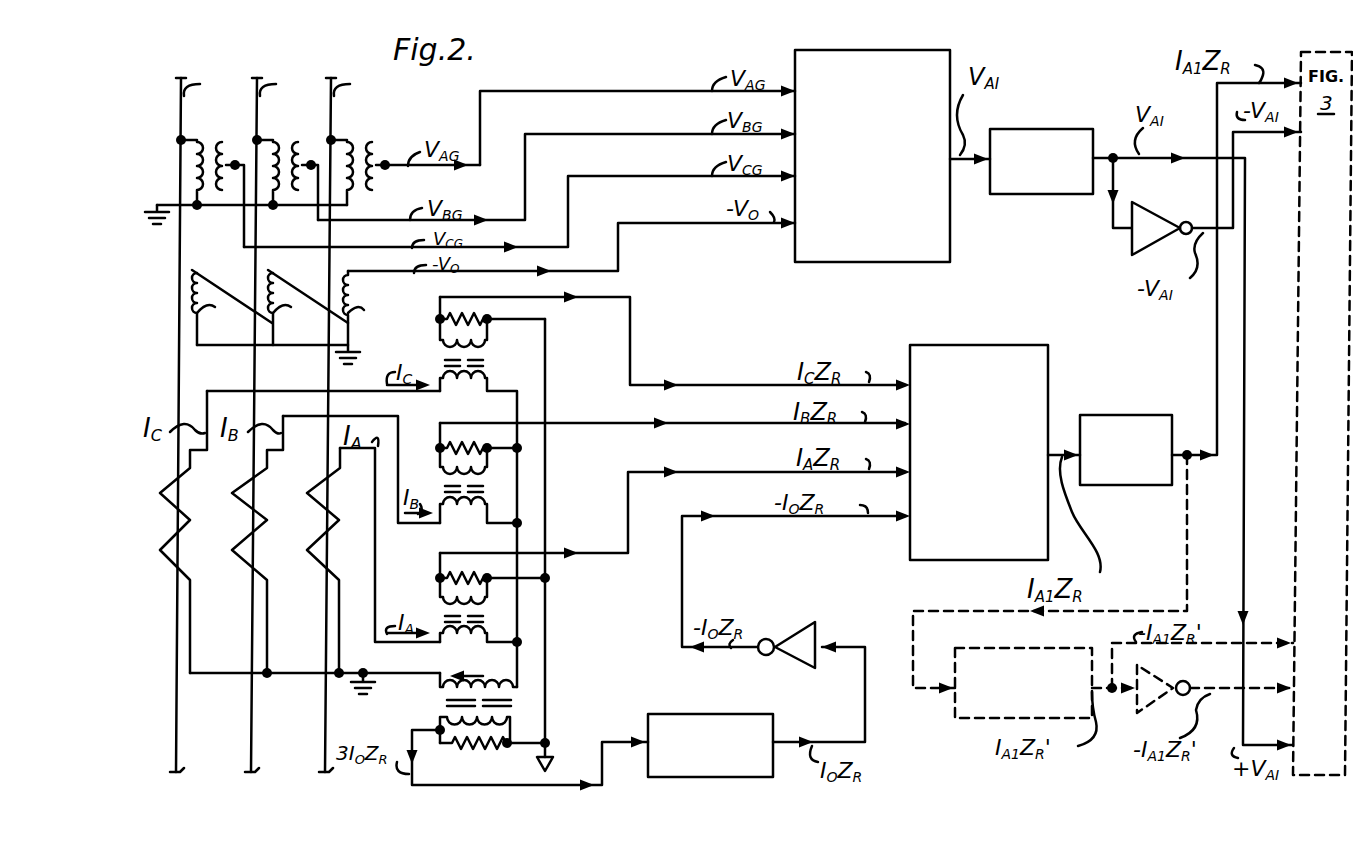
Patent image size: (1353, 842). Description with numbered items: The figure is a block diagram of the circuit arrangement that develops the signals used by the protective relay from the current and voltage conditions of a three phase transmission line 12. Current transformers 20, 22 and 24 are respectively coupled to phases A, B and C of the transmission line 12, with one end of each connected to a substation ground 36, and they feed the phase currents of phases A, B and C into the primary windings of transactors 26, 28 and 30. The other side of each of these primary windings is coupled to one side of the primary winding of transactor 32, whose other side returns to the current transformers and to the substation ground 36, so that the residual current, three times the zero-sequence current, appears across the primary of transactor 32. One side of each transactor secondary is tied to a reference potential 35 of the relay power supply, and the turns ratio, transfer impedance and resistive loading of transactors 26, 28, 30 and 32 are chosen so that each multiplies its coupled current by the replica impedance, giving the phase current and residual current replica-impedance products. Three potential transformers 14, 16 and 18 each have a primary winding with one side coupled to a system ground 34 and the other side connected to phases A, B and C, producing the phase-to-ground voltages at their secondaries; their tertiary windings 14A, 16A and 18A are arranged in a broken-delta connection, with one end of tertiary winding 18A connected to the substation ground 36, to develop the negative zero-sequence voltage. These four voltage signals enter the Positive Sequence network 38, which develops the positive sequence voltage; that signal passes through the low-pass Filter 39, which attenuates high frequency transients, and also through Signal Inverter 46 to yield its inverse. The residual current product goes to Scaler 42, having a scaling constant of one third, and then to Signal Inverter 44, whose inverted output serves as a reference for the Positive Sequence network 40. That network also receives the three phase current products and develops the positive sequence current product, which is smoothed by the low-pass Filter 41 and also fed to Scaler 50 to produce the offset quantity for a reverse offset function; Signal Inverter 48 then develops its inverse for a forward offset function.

The three phase transmission line 12 is at (270, 52).
The potential transformer 14 is at (381, 129).
The potential transformer 16 is at (304, 129).
The potential transformer 18 is at (228, 129).
The tertiary winding 14A is at (372, 308).
The tertiary winding 16A is at (308, 307).
The tertiary winding 18A is at (232, 307).
The current transformer 20 is at (343, 573).
The current transformer 22 is at (269, 573).
The current transformer 24 is at (193, 573).
The transactor 26 is at (555, 608).
The transactor 28 is at (555, 495).
The transactor 30 is at (558, 351).
The transactor 32 is at (556, 697).
The system ground 34 is at (157, 205).
The reference potential 35 is at (578, 764).
The substation ground 36 is at (358, 357).
The Positive Sequence network 38 is at (886, 227).
The Filter 39 is at (1050, 129).
The Positive Sequence network 40 is at (999, 502).
The Filter 41 is at (1126, 485).
The Scaler 42 is at (705, 714).
The Signal Inverter 44 is at (818, 642).
The Signal Inverter 46 is at (1124, 254).
The Signal Inverter 48 is at (1137, 712).
The Scaler 50 is at (1036, 710).